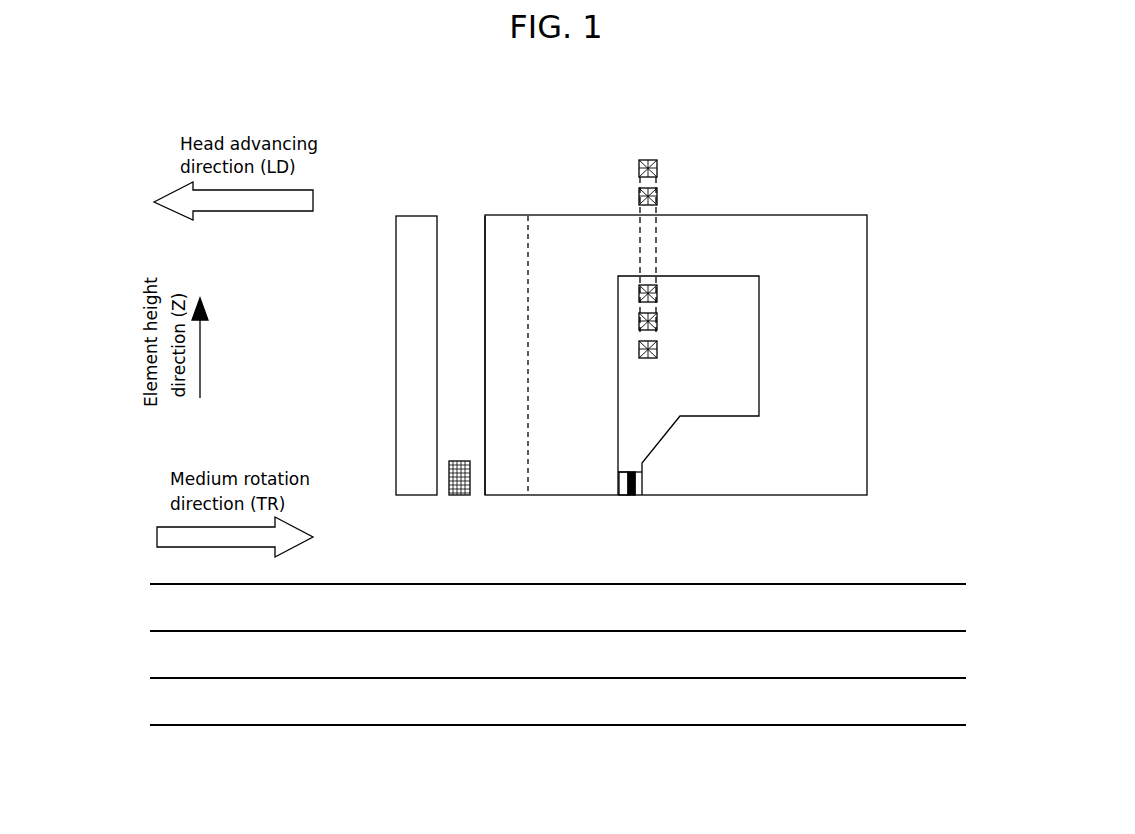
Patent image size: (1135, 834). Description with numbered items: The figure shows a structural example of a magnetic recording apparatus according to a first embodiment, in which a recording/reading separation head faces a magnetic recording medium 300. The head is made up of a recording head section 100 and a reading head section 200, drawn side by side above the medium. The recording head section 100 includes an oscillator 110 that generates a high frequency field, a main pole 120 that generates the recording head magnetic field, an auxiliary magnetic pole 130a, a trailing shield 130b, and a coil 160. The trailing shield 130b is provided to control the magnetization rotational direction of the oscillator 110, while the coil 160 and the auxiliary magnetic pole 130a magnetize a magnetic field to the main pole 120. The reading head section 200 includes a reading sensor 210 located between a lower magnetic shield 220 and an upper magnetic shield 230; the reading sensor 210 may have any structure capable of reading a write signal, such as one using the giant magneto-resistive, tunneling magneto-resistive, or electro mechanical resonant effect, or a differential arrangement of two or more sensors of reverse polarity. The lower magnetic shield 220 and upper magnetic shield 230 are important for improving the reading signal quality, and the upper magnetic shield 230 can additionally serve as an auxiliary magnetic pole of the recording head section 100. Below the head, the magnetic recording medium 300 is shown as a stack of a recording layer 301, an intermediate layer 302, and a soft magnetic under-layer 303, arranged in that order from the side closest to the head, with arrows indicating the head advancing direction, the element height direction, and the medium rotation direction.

The recording head section 100 is at (557, 533).
The oscillator 110 is at (633, 497).
The main pole 120 is at (611, 482).
The auxiliary magnetic pole 130a is at (858, 376).
The trailing shield 130b is at (657, 480).
The coil 160 is at (651, 186).
The reading head section 200 is at (393, 533).
The reading sensor 210 is at (460, 497).
The lower magnetic shield 220 is at (397, 217).
The upper magnetic shield 230 is at (486, 217).
The magnetic recording medium 300 is at (882, 595).
The recording layer 301 is at (558, 607).
The intermediate layer 302 is at (558, 664).
The soft magnetic under-layer 303 is at (558, 709).